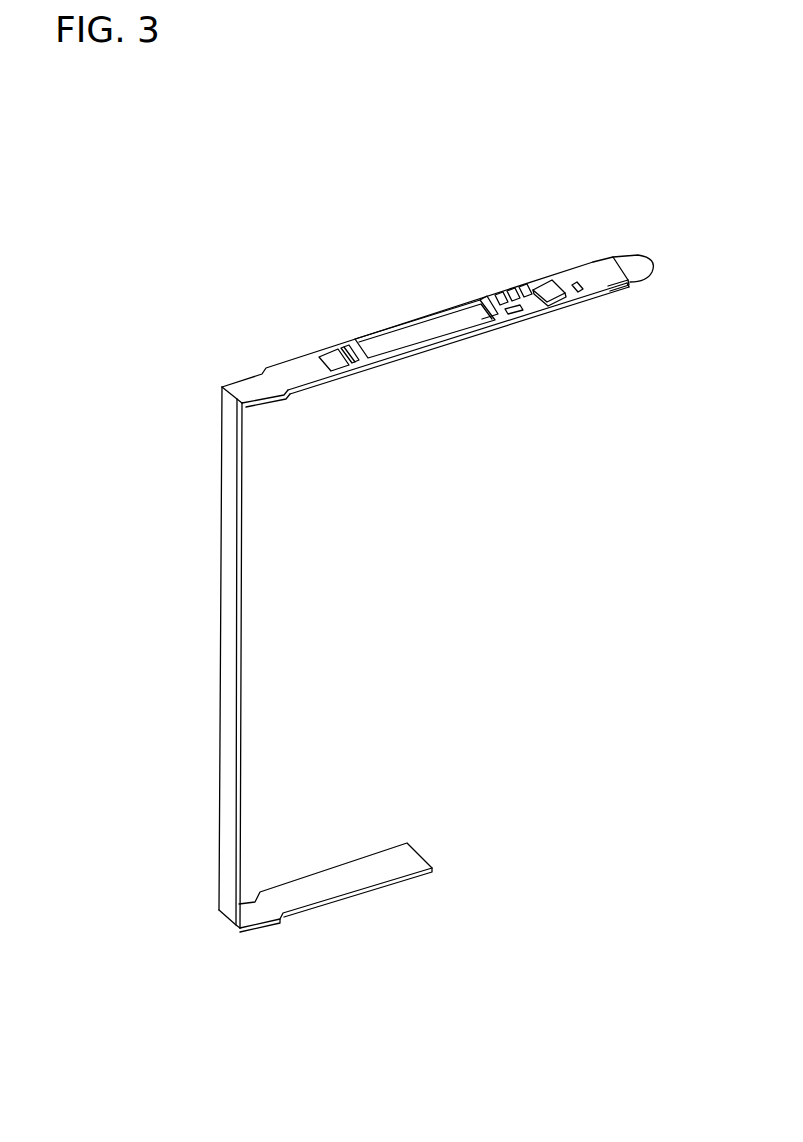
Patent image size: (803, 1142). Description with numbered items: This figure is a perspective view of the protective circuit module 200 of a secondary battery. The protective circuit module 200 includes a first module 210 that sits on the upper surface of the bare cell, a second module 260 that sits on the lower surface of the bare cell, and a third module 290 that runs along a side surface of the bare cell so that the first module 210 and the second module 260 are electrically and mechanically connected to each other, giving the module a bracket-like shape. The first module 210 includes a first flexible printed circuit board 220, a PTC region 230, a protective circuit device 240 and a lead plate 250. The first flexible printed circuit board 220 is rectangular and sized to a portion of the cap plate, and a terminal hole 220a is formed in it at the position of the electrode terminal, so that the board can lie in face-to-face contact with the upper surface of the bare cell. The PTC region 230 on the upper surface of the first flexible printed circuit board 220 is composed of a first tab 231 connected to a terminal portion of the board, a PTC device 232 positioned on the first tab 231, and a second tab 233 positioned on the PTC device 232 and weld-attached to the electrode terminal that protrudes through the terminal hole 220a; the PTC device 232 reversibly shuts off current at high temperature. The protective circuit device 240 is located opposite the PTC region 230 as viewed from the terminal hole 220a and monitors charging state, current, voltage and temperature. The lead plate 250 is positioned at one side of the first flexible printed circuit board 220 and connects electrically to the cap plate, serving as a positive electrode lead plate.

The protective circuit module 200 is at (597, 144).
The first module 210 is at (276, 364).
The first flexible printed circuit board 220 is at (307, 377).
The terminal hole 220a is at (488, 296).
The PTC region 230 is at (364, 247).
The first tab 231 is at (331, 357).
The PTC device 232 is at (351, 348).
The second tab 233 is at (405, 328).
The protective circuit device 240 is at (577, 285).
The lead plate 250 is at (642, 262).
The second module 260 is at (398, 889).
The third module 290 is at (206, 655).